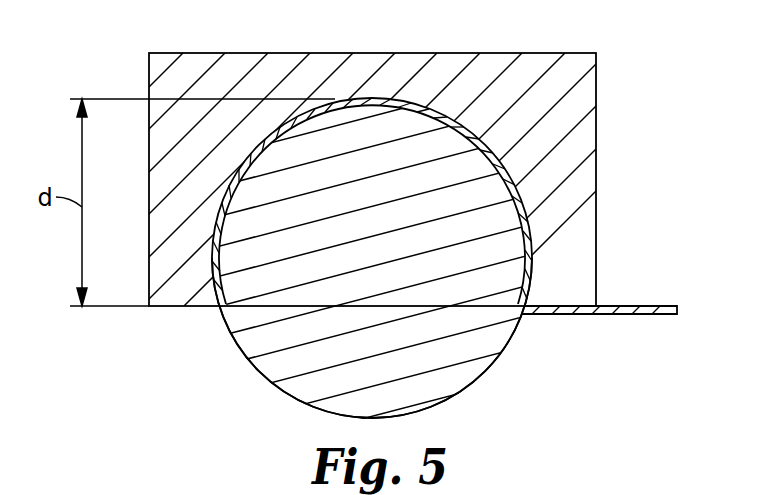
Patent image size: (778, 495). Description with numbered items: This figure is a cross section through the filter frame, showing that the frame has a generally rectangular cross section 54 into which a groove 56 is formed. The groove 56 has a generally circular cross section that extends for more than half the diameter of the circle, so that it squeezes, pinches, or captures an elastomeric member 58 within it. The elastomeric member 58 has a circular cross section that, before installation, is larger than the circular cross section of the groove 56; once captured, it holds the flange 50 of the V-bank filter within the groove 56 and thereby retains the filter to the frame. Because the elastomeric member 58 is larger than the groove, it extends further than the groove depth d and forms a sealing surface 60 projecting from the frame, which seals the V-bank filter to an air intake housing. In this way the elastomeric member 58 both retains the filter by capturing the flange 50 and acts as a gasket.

The flange 50 is at (647, 316).
The rectangular cross section 54 is at (489, 67).
The groove 56 is at (477, 151).
The elastomeric member 58 is at (488, 346).
The sealing surface 60 is at (268, 377).